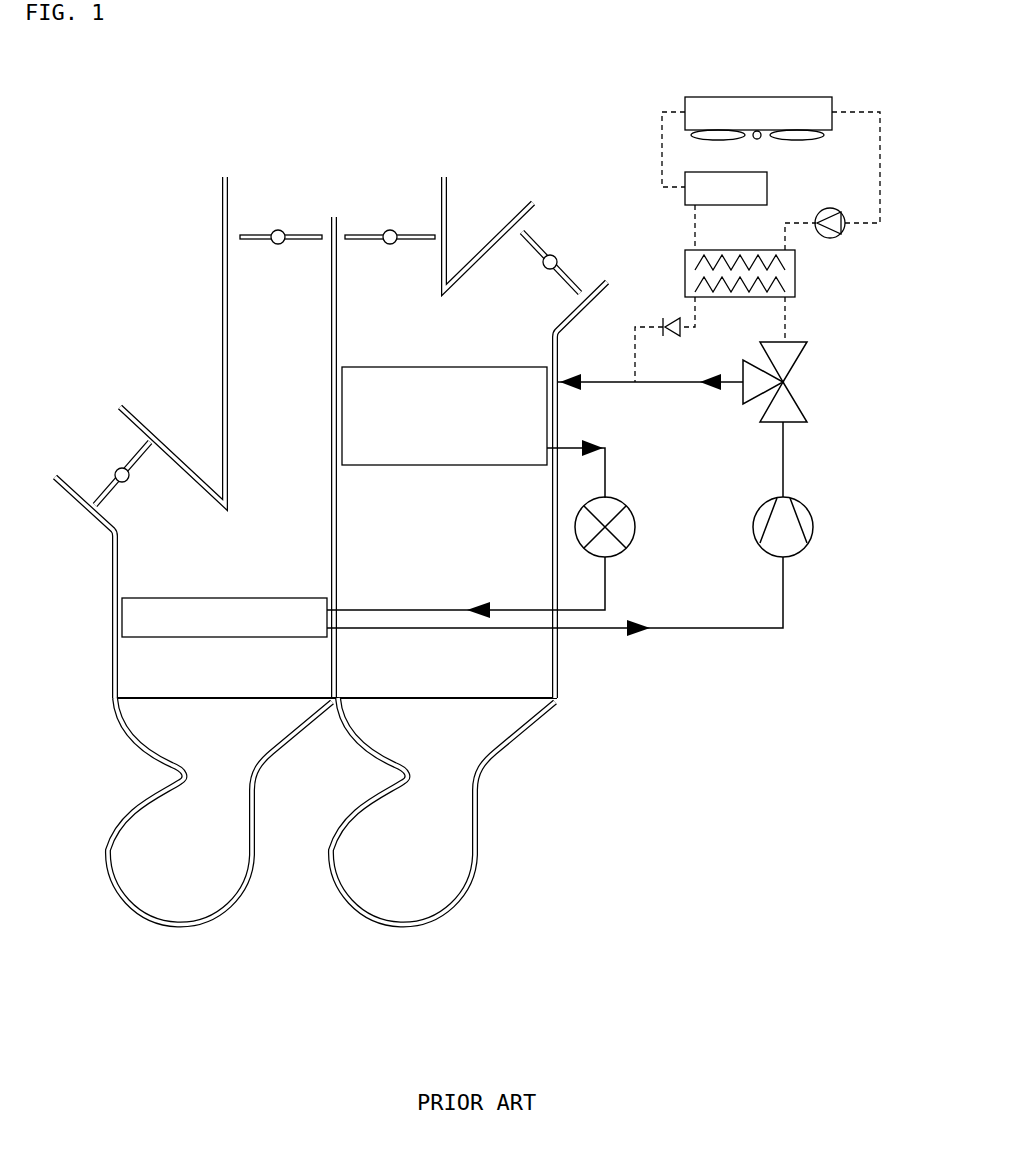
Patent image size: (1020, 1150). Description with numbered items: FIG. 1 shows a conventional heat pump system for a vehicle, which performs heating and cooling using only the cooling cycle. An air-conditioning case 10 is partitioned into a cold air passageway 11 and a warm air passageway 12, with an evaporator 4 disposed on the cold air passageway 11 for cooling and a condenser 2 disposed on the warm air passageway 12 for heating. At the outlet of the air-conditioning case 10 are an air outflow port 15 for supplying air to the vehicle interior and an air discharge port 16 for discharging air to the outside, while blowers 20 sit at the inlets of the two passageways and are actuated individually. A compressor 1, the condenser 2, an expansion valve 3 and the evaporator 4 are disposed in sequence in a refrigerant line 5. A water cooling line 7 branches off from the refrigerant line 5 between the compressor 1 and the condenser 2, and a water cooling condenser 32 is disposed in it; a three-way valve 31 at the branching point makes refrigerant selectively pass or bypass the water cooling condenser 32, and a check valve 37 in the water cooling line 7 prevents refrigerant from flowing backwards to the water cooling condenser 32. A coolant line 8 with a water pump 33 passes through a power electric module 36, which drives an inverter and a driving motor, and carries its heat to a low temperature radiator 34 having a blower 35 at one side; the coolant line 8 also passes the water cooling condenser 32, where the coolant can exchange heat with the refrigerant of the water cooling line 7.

The compressor 1 is at (795, 535).
The condenser 2 is at (385, 377).
The expansion valve 3 is at (635, 527).
The evaporator 4 is at (148, 630).
The refrigerant line 5 is at (784, 600).
The water cooling line 7 is at (787, 318).
The coolant line 8 is at (881, 172).
The air-conditioning case 10 is at (572, 689).
The cold air passageway 11 is at (195, 580).
The warm air passageway 12 is at (424, 574).
The air outflow port 15 is at (272, 215).
The air discharge port 16 is at (545, 233).
The blower 20 is at (180, 930).
The three-way valve 31 is at (795, 362).
The water cooling condenser 32 is at (796, 280).
The water pump 33 is at (846, 231).
The low temperature radiator 34 is at (756, 97).
The blower 35 is at (760, 139).
The power electric module 36 is at (685, 202).
The check valve 37 is at (668, 318).